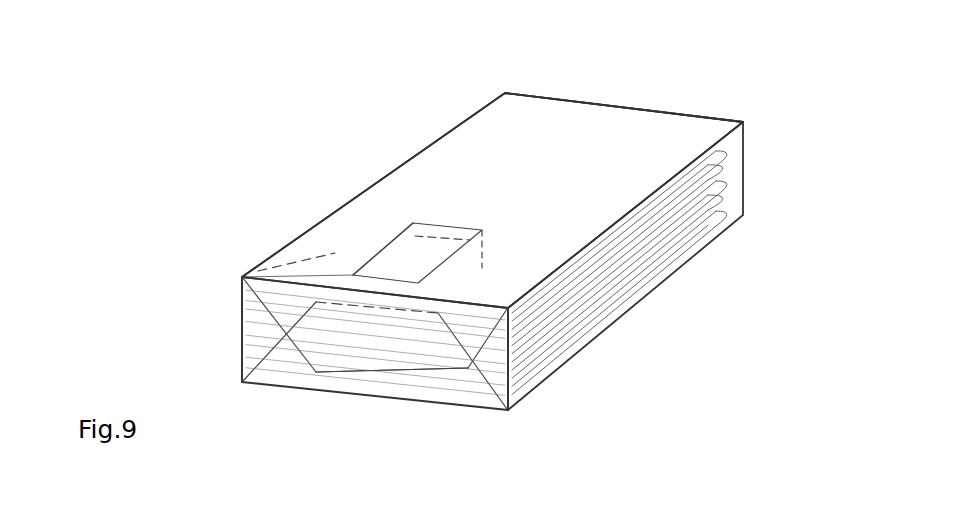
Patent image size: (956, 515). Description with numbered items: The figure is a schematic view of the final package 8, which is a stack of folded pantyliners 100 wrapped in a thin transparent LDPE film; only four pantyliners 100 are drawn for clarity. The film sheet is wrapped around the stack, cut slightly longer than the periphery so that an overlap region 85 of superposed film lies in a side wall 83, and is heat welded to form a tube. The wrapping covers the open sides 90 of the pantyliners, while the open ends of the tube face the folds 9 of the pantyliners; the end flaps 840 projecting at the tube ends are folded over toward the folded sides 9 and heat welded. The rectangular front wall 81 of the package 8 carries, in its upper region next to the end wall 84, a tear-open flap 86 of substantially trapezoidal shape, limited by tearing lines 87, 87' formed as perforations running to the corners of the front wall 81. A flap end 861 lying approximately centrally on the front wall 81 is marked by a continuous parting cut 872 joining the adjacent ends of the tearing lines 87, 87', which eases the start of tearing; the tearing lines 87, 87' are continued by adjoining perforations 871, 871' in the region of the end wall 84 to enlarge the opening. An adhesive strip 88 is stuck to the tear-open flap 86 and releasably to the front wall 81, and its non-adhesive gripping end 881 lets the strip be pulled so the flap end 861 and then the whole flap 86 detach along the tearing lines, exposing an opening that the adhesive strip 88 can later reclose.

The package 8 is at (638, 102).
The folds 9 is at (495, 369).
The front wall 81 is at (562, 145).
The side wall 83 is at (672, 208).
The end wall 84 is at (388, 365).
The overlap region 85 is at (660, 272).
The tear-open flap 86 is at (327, 272).
The tearing line 87 is at (346, 221).
The tearing line 87' is at (594, 246).
The adhesive strip 88 is at (322, 268).
The open sides 90 is at (699, 213).
The pantyliners 100 is at (735, 143).
The end flaps 840 is at (368, 325).
The flap end 861 is at (418, 255).
The perforation 871 is at (197, 308).
The perforation 871' is at (578, 404).
The parting cut 872 is at (428, 243).
The gripping end 881 is at (463, 233).